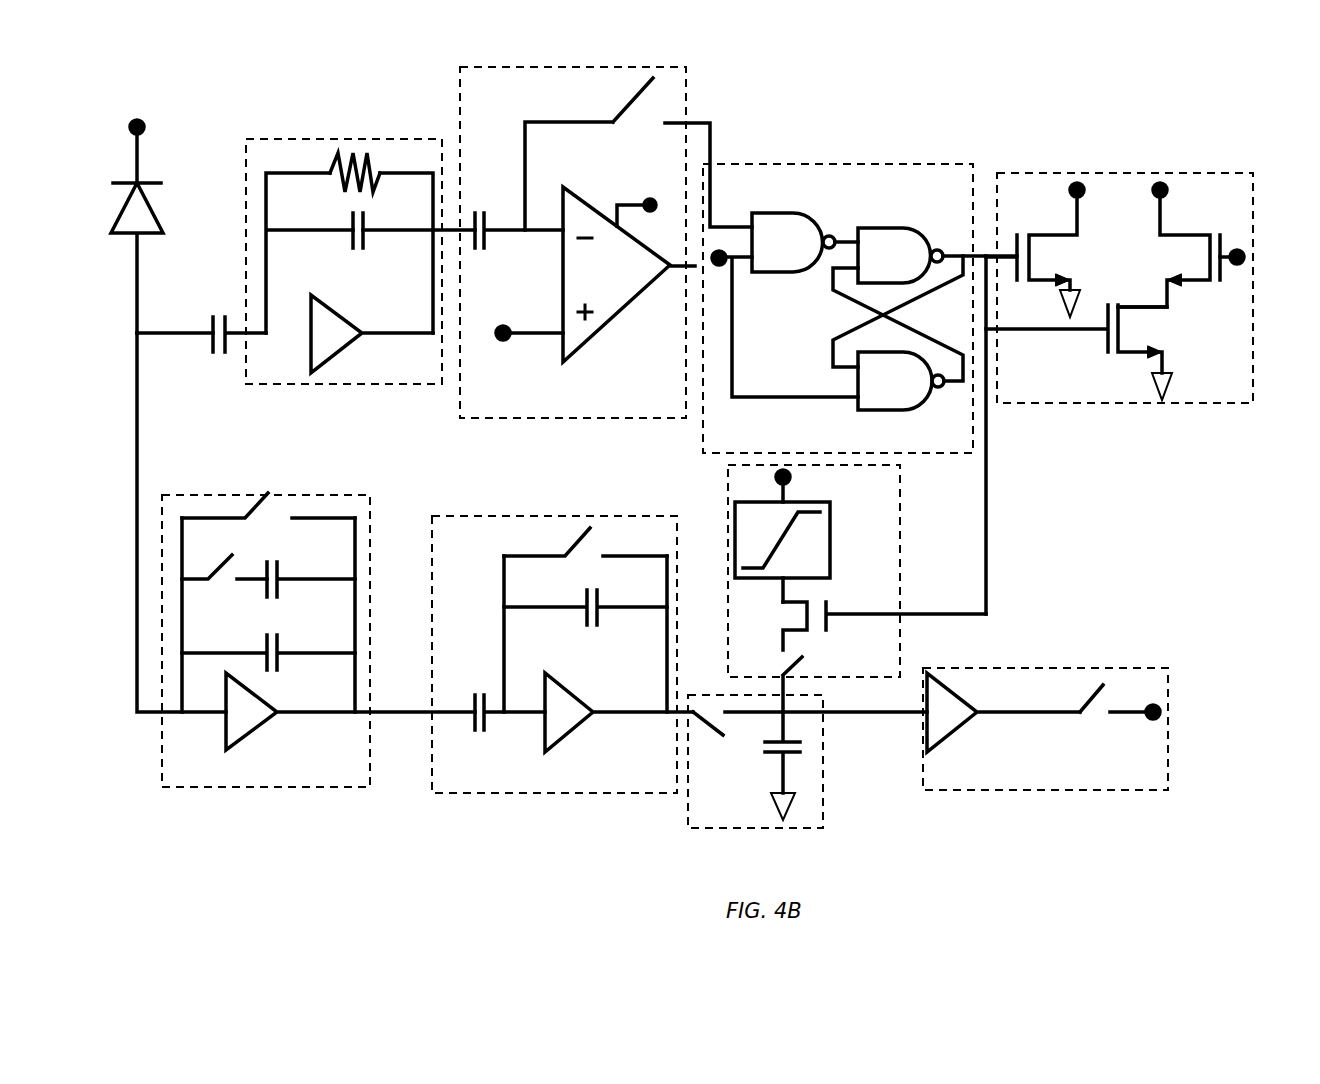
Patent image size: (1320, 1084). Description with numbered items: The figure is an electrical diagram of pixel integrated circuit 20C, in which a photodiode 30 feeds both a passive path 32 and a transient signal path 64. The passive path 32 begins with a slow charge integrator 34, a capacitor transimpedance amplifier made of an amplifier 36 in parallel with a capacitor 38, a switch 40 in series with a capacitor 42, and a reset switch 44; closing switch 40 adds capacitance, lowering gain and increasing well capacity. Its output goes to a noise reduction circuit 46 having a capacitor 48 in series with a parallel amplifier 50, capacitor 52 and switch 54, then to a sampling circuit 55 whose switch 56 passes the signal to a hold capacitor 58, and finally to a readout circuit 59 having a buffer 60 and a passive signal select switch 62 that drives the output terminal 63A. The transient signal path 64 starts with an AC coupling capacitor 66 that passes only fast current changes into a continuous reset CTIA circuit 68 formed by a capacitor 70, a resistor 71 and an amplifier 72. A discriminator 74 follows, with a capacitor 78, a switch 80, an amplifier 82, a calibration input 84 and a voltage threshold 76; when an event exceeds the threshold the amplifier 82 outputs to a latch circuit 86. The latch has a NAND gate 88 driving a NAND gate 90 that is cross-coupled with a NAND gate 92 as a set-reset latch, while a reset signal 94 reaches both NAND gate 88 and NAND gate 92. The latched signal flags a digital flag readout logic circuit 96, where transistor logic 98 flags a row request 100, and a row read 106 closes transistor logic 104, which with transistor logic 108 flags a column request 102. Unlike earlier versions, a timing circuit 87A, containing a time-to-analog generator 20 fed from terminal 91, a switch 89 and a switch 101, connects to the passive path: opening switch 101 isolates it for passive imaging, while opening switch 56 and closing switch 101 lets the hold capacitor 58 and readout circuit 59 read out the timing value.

The time-to-analog generator 20 is at (832, 518).
The pixel integrated circuit 20C is at (1212, 788).
The photodiode 30 is at (260, 208).
The passive path 32 is at (141, 447).
The slow charge integrator 34 is at (370, 603).
The amplifier 36 is at (258, 730).
The capacitor 38 is at (283, 645).
The switch 40 is at (217, 570).
The capacitor 42 is at (283, 573).
The reset switch 44 is at (265, 498).
The noise reduction circuit 46 is at (497, 513).
The capacitor 48 is at (472, 700).
The amplifier 50 is at (585, 730).
The capacitor 52 is at (598, 618).
The switch 54 is at (585, 535).
The sampling circuit 55 is at (682, 798).
The switch 56 is at (705, 722).
The hold capacitor 58 is at (775, 756).
The readout circuit 59 is at (1067, 797).
The buffer 60 is at (960, 728).
The passive signal select switch 62 is at (1088, 705).
The output terminal 63A is at (1160, 720).
The transient signal path 64 is at (172, 323).
The AC coupling capacitor 66 is at (226, 352).
The continuous reset CTIA circuit 68 is at (287, 135).
The capacitor 70 is at (350, 228).
The resistor 71 is at (370, 175).
The amplifier 72 is at (355, 325).
The discriminator 74 is at (570, 428).
The voltage threshold 76 is at (503, 342).
The capacitor 78 is at (474, 224).
The switch 80 is at (646, 83).
The amplifier 82 is at (636, 302).
The calibration input 84 is at (656, 200).
The latch circuit 86 is at (835, 156).
The timing circuit 87A is at (902, 575).
The NAND gate 88 is at (795, 213).
The switch 89 is at (800, 600).
The NAND gate 90 is at (888, 228).
The supply terminal 91 is at (790, 478).
The NAND gate 92 is at (885, 412).
The reset signal 94 is at (720, 268).
The digital flag readout logic circuit 96 is at (1140, 410).
The transistor logic 98 is at (1033, 233).
The row request 100 is at (1084, 196).
The switch 101 is at (787, 665).
The column request 102 is at (1153, 196).
The transistor logic 104 is at (1205, 235).
The row read 106 is at (1237, 264).
The transistor logic 108 is at (1145, 310).